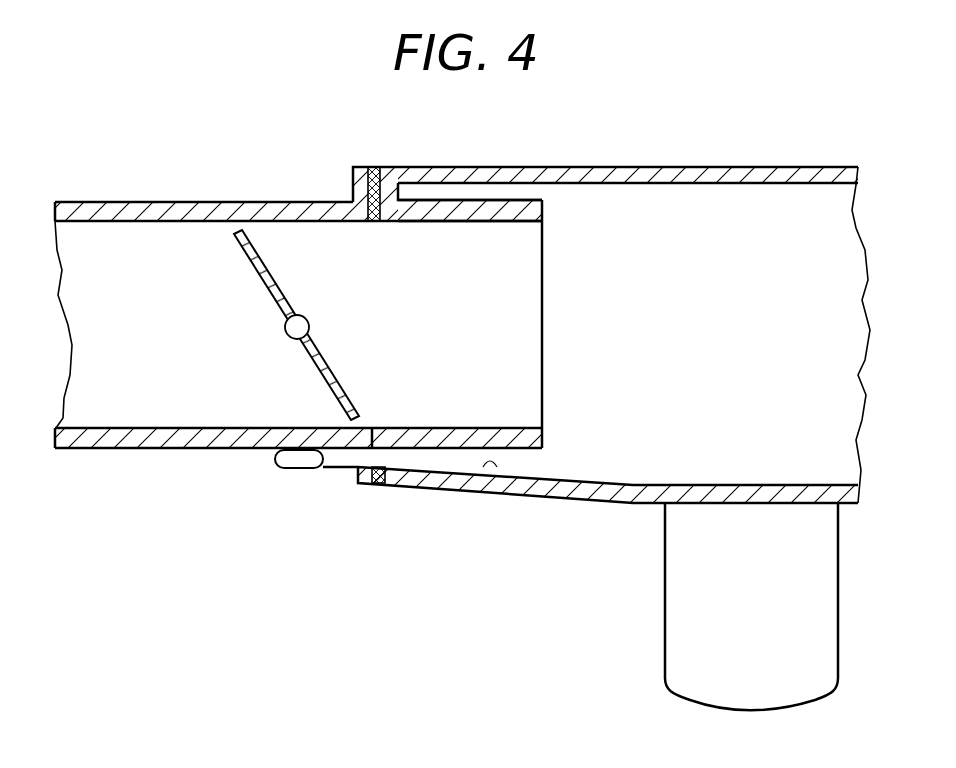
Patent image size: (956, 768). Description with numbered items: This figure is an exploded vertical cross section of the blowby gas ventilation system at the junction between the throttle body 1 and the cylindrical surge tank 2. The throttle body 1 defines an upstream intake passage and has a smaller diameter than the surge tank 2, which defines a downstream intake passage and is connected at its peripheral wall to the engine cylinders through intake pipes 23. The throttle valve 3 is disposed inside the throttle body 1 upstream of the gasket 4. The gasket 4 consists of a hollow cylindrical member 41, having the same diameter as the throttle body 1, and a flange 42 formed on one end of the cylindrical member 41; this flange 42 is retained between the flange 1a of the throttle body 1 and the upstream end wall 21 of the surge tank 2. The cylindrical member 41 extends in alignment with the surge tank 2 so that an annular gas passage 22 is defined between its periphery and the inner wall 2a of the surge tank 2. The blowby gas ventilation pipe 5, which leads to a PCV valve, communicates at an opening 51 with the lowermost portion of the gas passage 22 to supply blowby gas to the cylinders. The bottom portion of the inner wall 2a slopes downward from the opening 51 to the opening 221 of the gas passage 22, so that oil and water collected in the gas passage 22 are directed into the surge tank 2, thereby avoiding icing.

The throttle body 1 is at (123, 202).
The flange of the throttle body 1a is at (357, 185).
The surge tank 2 is at (686, 167).
The inner wall of the surge tank 2a is at (490, 466).
The throttle valve 3 is at (260, 252).
The gasket 4 is at (487, 281).
The blowby gas ventilation pipe 5 is at (289, 468).
The upstream end wall of the surge tank 21 is at (392, 177).
The annular gas passage 22 is at (452, 190).
The intake pipes 23 is at (680, 618).
The hollow cylindrical member 41 is at (490, 208).
The flange of the gasket 42 is at (374, 187).
The opening of the blowby gas ventilation pipe 51 is at (370, 462).
The opening of the gas passage 221 is at (548, 458).